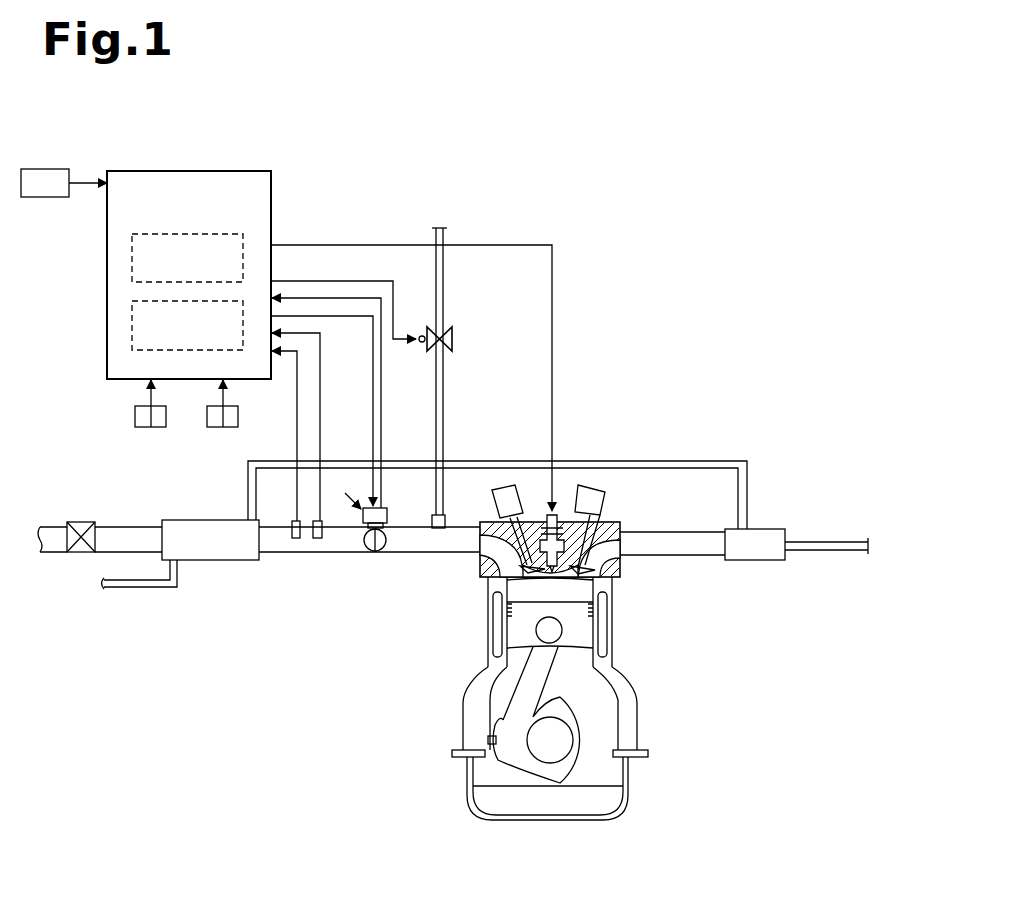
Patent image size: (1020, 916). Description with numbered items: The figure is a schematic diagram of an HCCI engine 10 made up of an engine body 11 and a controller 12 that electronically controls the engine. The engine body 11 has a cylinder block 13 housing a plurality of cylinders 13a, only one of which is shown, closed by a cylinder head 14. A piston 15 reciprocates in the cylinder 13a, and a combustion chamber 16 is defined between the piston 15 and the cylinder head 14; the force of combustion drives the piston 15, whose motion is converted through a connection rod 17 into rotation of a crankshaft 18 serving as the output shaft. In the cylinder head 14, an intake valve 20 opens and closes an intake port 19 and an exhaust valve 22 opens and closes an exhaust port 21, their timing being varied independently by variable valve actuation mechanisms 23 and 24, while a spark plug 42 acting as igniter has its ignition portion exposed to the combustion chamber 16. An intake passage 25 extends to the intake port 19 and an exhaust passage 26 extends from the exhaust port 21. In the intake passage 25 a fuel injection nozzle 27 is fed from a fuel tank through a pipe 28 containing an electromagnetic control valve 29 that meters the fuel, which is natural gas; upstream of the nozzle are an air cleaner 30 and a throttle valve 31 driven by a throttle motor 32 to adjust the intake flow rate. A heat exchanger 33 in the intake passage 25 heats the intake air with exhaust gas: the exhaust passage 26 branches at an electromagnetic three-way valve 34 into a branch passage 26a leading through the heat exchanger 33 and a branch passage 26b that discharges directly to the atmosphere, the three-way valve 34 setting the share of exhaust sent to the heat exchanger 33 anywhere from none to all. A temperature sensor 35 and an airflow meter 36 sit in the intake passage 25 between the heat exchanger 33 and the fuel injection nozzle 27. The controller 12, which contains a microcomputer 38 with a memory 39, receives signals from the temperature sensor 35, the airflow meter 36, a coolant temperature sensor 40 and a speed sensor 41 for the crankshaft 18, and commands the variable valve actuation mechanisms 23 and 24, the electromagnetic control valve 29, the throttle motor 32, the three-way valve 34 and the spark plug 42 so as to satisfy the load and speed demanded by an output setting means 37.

The HCCI engine 10 is at (702, 311).
The engine body 11 is at (442, 724).
The controller 12 is at (275, 187).
The cylinder block 13 is at (488, 640).
The cylinder 13a is at (592, 632).
The cylinder head 14 is at (492, 566).
The piston 15 is at (490, 680).
The combustion chamber 16 is at (590, 588).
The connection rod 17 is at (540, 670).
The crankshaft 18 is at (548, 753).
The intake port 19 is at (482, 550).
The intake valve 20 is at (500, 578).
The exhaust port 21 is at (622, 570).
The exhaust valve 22 is at (620, 533).
The variable valve actuation mechanism 23 is at (490, 490).
The variable valve actuation mechanism 24 is at (605, 500).
The intake passage 25 is at (276, 552).
The exhaust passage 26 is at (696, 556).
The branch passage 26a is at (747, 481).
The branch passage 26b is at (830, 550).
The fuel injection nozzle 27 is at (445, 520).
The pipe 28 is at (444, 378).
The electromagnetic control valve 29 is at (452, 337).
The air cleaner 30 is at (82, 552).
The throttle valve 31 is at (387, 514).
The throttle motor 32 is at (343, 489).
The heat exchanger 33 is at (212, 560).
The electromagnetic three-way valve 34 is at (760, 560).
The temperature sensor 35 is at (322, 538).
The airflow meter 36 is at (292, 524).
The output setting means 37 is at (42, 197).
The microcomputer 38 is at (132, 255).
The memory 39 is at (132, 322).
The coolant temperature sensor 40 is at (152, 427).
The speed sensor 41 is at (224, 427).
The spark plug 42 is at (586, 580).